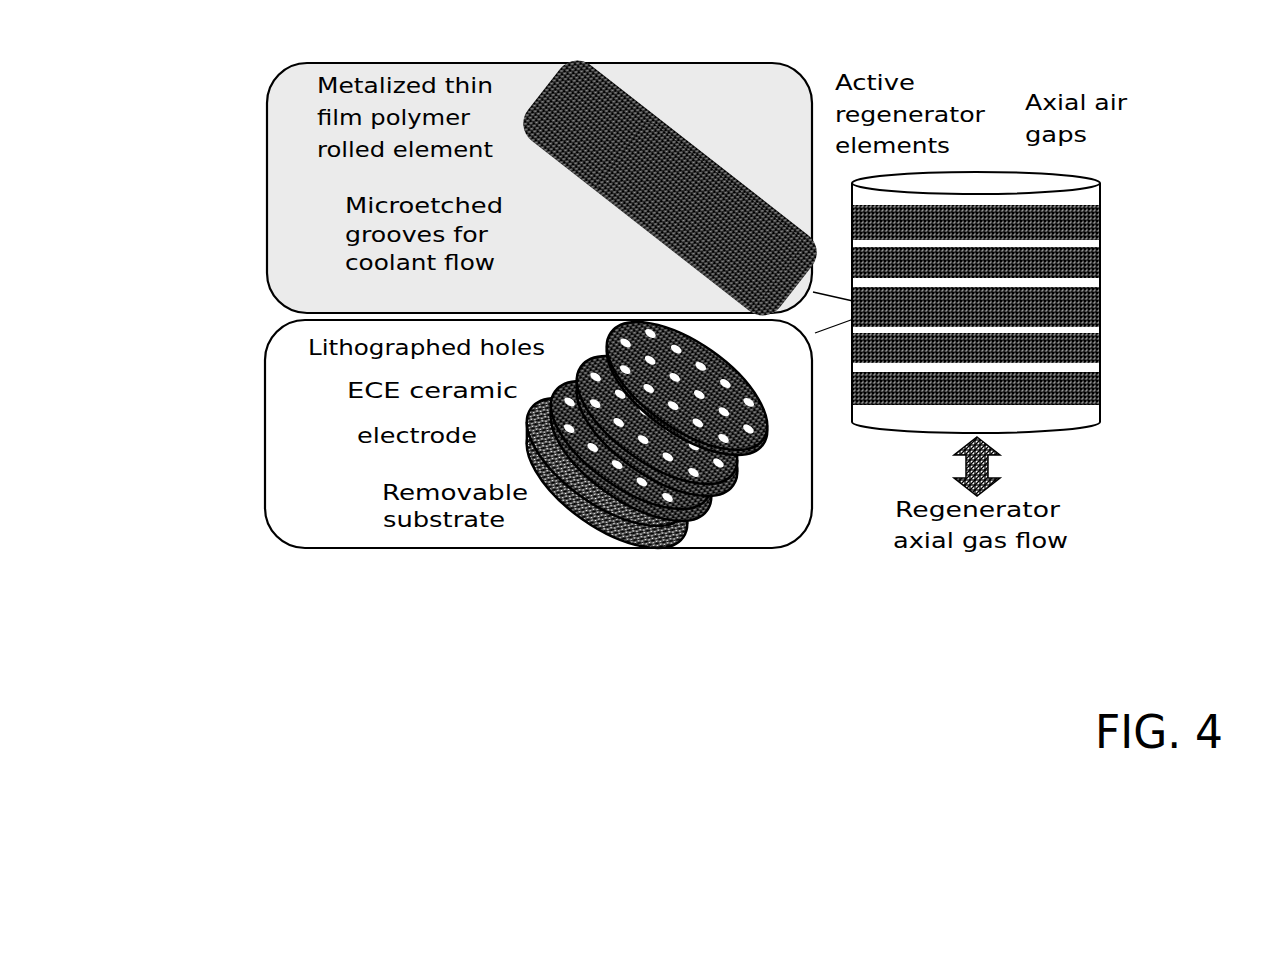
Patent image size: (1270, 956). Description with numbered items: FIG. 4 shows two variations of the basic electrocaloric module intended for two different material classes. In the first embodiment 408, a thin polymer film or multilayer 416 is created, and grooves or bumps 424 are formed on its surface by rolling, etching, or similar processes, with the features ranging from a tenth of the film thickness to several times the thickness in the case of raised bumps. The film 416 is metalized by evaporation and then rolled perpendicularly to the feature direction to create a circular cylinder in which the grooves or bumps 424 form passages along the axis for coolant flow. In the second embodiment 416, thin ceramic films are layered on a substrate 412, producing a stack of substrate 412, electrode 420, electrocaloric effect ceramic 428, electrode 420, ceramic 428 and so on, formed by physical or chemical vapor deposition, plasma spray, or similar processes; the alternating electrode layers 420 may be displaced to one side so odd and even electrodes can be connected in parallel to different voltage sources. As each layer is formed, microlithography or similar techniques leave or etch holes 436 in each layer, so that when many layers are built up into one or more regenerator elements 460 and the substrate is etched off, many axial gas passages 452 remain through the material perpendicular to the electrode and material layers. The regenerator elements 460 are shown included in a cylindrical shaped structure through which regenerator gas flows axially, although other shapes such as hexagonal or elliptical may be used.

The first embodiment 408 is at (267, 85).
The thin polymer film or multilayer 416 is at (265, 395).
The grooves or bumps 424 is at (616, 184).
The holes 436 is at (652, 370).
The electrocaloric effect (ECE) ceramic 428 is at (597, 397).
The electrode 420 is at (582, 433).
The substrate 412 is at (610, 510).
The regenerator elements 460 is at (884, 308).
The gas passages 452 is at (1075, 285).